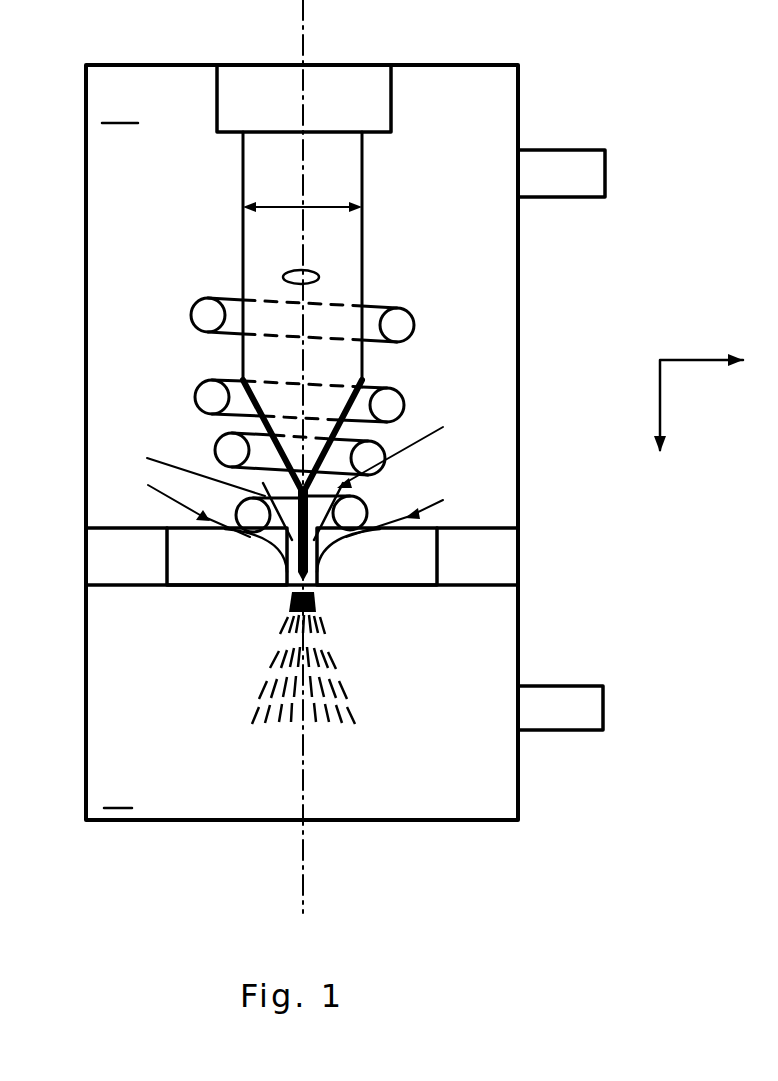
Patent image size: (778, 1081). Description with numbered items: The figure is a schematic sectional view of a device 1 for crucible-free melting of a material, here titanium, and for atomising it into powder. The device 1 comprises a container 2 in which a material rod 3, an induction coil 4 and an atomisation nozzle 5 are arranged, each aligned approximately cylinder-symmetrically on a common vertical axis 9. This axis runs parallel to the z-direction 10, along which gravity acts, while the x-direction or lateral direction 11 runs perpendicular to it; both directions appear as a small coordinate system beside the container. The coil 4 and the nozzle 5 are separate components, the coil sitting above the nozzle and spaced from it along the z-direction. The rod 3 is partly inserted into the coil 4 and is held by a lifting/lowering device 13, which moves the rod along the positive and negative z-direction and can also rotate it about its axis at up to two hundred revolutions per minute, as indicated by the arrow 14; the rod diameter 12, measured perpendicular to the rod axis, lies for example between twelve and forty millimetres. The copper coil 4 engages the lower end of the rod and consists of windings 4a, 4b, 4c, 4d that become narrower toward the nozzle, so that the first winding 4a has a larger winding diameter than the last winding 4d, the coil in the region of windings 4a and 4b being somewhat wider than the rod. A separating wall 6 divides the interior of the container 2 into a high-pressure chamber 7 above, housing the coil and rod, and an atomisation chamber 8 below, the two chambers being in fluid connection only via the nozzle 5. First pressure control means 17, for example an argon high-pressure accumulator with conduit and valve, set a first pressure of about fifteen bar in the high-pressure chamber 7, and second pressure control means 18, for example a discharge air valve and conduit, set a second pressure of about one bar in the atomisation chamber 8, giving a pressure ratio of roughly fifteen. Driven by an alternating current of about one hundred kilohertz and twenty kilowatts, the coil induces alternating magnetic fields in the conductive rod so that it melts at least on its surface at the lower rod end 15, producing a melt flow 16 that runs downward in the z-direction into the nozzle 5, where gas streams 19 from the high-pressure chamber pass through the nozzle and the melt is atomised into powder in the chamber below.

The device 1 is at (482, 848).
The container 2 is at (147, 823).
The material rod 3 is at (362, 237).
The induction coil 4 is at (302, 366).
The first winding 4a is at (408, 310).
The winding 4b is at (403, 393).
The winding 4c is at (372, 453).
The last winding 4d is at (370, 507).
The atomisation nozzle 5 is at (283, 608).
The separating wall 6 is at (147, 591).
The high-pressure chamber 7 is at (120, 108).
The atomisation chamber 8 is at (118, 793).
The vertical axis 9 is at (305, 875).
The z-direction 10 is at (658, 405).
The x-direction 11 is at (700, 358).
The tube diameter 12 is at (317, 200).
The lifting/lowering device 13 is at (391, 95).
The arrow 14 is at (318, 274).
The lower rod end 15 is at (228, 475).
The melt flow 16 is at (262, 537).
The first pressure control means 17 is at (565, 148).
The second pressure control means 18 is at (563, 682).
The gas flow lines 19 is at (296, 470).